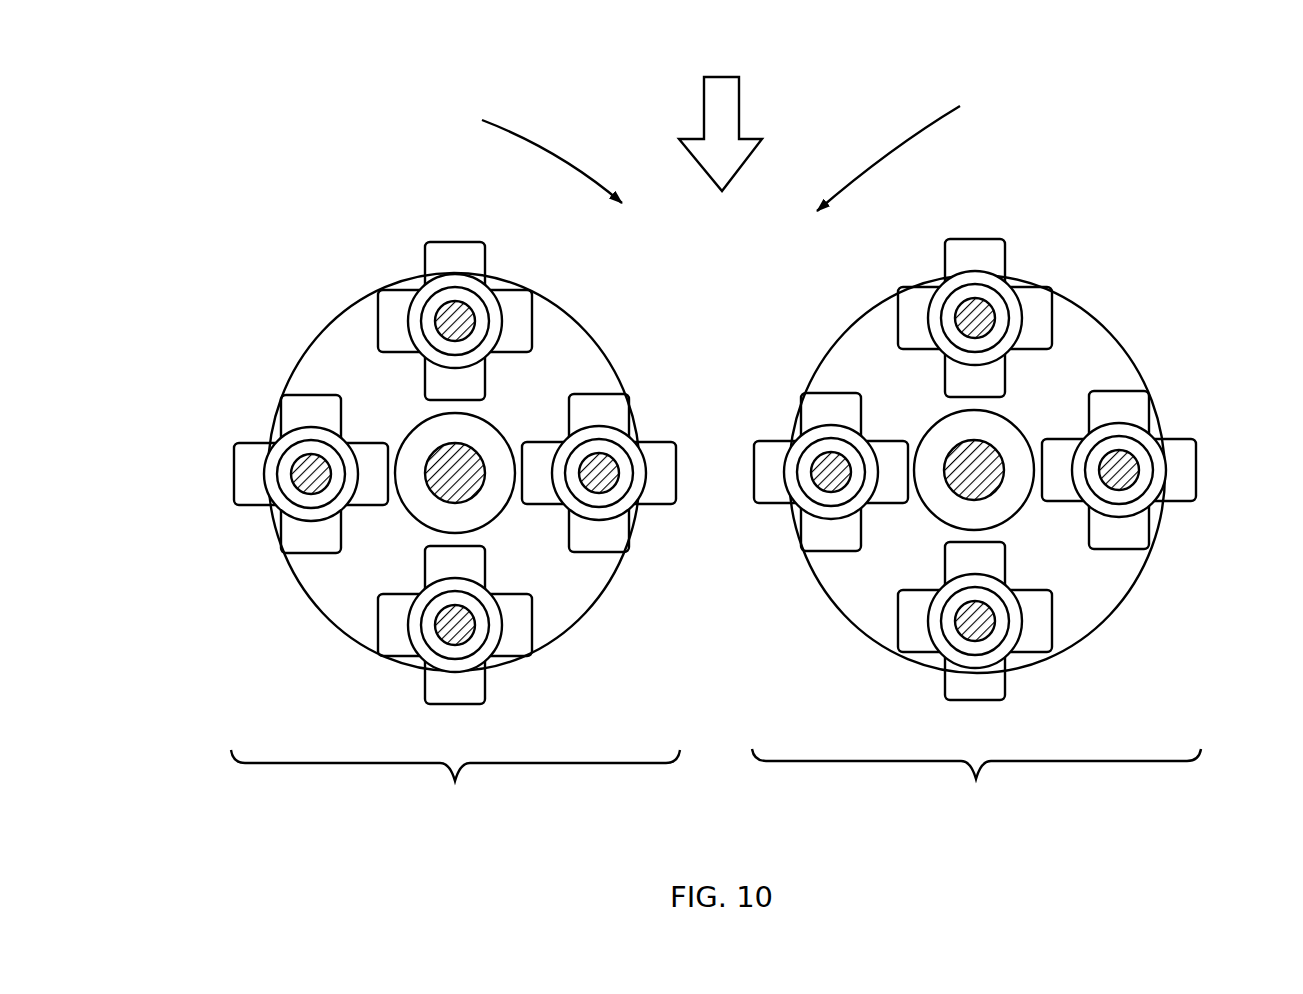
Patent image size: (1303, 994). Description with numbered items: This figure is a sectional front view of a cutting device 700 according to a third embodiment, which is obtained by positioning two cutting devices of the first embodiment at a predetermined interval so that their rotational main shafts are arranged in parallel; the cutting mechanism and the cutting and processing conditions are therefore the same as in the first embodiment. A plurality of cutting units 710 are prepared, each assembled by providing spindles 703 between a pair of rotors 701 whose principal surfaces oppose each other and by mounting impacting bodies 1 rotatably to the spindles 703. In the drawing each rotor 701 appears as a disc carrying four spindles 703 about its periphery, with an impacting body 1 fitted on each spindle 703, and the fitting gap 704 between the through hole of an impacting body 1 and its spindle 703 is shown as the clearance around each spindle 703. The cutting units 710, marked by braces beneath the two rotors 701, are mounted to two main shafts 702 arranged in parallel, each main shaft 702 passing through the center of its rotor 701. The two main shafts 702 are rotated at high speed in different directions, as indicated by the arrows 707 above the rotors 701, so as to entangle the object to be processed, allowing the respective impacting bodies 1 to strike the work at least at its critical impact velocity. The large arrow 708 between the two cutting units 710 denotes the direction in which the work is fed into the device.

The impacting body 1 is at (452, 243).
The cutting device 700 is at (403, 144).
The rotor 701 is at (570, 342).
The main shaft 702 is at (482, 512).
The spindle 703 is at (447, 306).
The fitting gap 704 is at (477, 298).
The arrow 707 is at (545, 143).
The work feeding direction 708 is at (739, 114).
The cutting unit 710 is at (716, 785).